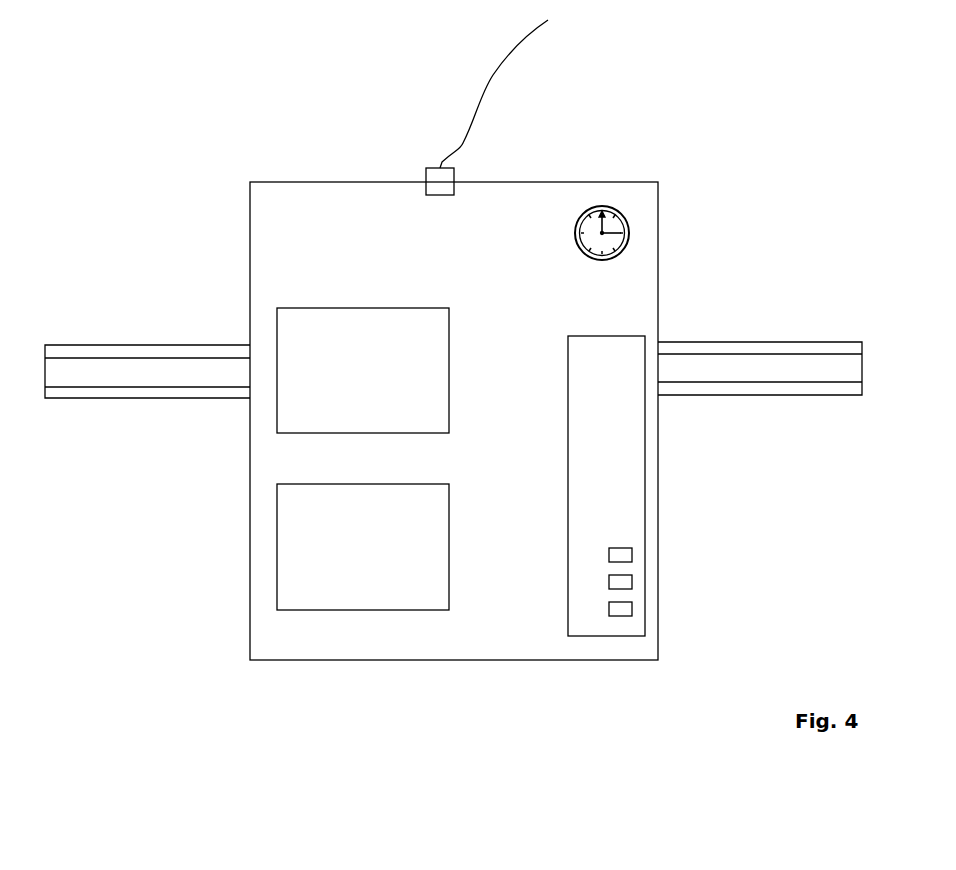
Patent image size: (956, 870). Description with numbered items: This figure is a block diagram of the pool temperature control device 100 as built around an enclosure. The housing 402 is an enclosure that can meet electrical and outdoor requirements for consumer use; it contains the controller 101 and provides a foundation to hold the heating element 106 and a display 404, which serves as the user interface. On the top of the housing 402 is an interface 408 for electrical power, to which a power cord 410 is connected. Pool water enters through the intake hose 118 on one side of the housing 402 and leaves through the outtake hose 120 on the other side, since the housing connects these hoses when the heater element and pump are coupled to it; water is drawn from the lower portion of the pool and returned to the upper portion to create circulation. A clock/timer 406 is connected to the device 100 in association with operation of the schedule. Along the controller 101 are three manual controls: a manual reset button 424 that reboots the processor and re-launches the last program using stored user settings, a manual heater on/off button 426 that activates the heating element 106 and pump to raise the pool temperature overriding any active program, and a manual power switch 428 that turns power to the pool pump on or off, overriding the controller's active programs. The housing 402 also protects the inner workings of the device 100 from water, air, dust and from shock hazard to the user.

The device 100 is at (138, 676).
The controller 101 is at (658, 485).
The heating element 106 is at (427, 330).
The intake hose 118 is at (127, 387).
The outtake hose 120 is at (793, 347).
The housing 402 is at (524, 537).
The display 404 is at (305, 594).
The clock/timer 406 is at (625, 245).
The interface 408 is at (440, 182).
The power cord 410 is at (493, 75).
The manual reset button 424 is at (632, 557).
The manual heater on/off button 426 is at (632, 582).
The manual power switch 428 is at (622, 616).